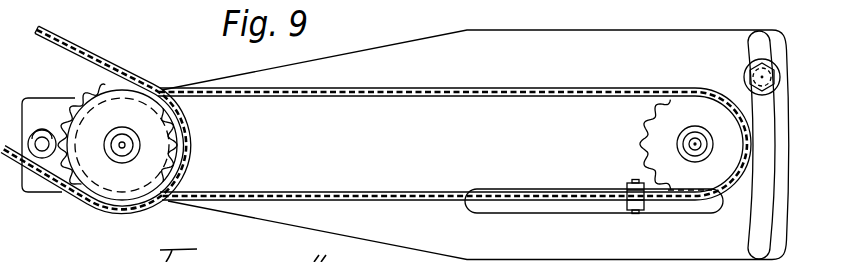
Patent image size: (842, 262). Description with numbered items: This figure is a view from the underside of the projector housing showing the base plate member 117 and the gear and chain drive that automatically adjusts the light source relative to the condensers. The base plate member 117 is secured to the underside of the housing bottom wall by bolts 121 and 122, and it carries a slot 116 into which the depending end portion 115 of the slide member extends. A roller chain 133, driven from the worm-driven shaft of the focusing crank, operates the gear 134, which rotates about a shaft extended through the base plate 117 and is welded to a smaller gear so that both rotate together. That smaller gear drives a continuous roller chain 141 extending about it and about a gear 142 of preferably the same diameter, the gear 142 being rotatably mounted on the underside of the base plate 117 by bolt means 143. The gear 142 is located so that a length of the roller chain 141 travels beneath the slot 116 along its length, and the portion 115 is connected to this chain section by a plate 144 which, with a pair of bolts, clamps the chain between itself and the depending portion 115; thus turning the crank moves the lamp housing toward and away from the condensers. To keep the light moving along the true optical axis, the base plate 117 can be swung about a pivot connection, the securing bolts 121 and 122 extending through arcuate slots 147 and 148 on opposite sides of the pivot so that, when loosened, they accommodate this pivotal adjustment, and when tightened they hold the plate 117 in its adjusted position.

The end portion of slide member 115 is at (636, 213).
The slot 116 is at (505, 213).
The base plate member 117 is at (533, 33).
The bolt 121 is at (42, 147).
The bolt 122 is at (744, 73).
The roller chain 133 is at (63, 38).
The gear 134 is at (83, 84).
The continuous roller chain 141 is at (474, 89).
The gear 142 is at (647, 120).
The bolt means 143 is at (698, 148).
The plate 144 is at (632, 183).
The arcuate slot 147 is at (42, 131).
The arcuate slot 148 is at (757, 220).